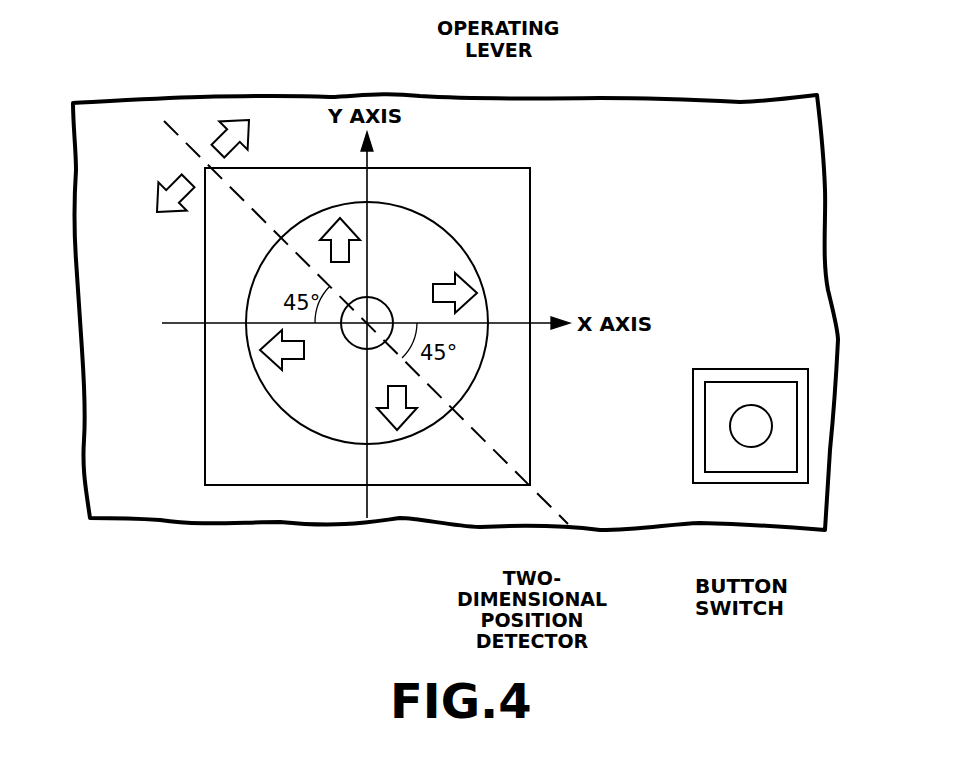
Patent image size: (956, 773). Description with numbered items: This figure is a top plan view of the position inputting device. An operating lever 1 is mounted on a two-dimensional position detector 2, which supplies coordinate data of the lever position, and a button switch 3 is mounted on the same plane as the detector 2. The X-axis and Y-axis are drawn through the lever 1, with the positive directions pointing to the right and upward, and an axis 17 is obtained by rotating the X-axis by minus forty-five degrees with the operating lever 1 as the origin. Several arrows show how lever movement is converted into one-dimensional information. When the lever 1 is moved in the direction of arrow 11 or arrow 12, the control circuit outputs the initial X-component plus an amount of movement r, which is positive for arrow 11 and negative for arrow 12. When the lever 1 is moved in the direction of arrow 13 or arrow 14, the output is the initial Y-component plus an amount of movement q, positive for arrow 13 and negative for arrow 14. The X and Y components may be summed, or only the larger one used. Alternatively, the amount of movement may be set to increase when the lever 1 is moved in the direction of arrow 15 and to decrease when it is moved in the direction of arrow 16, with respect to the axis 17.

The operating lever 1 is at (380, 298).
The two-dimensional position detector 2 is at (495, 460).
The button switch 3 is at (703, 485).
The arrow 11 is at (475, 290).
The arrow 12 is at (273, 365).
The arrow 13 is at (333, 213).
The arrow 14 is at (408, 423).
The arrow 15 is at (244, 122).
The arrow 16 is at (154, 187).
The axis 17 is at (181, 141).